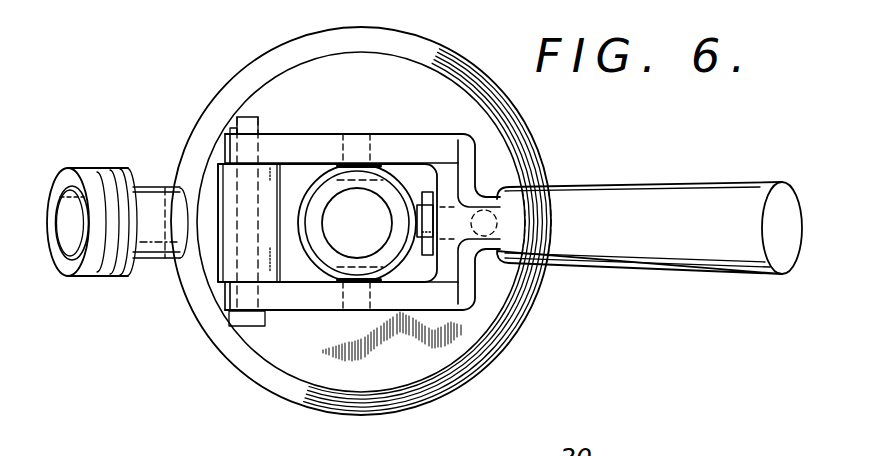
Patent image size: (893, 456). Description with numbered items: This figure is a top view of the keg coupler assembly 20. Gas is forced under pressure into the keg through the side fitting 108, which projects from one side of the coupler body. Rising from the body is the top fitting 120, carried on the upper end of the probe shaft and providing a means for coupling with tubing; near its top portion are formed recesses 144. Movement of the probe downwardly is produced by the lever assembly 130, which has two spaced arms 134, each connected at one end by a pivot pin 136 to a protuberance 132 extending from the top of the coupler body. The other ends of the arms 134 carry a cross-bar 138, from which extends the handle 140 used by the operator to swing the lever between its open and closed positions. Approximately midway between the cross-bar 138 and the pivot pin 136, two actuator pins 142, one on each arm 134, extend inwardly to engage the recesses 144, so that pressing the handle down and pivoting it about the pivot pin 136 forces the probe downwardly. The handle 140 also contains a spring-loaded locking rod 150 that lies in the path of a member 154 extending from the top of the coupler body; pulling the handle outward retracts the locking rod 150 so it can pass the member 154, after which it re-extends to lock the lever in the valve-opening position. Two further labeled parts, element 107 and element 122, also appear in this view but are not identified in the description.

The coupler assembly 20 is at (458, 47).
The tread 107 is at (502, 162).
The side fitting 108 is at (85, 168).
The top fitting 120 is at (311, 185).
The housing 122 is at (331, 241).
The lever assembly 130 is at (480, 277).
The protuberance 132 is at (217, 272).
The arms 134 is at (225, 147).
The pivot pin 136 is at (243, 327).
The cross-bar 138 is at (468, 158).
The handle 140 is at (728, 182).
The actuator pins 142 is at (377, 180).
The recesses 144 is at (394, 183).
The locking rod 150 is at (422, 218).
The member 154 is at (423, 250).